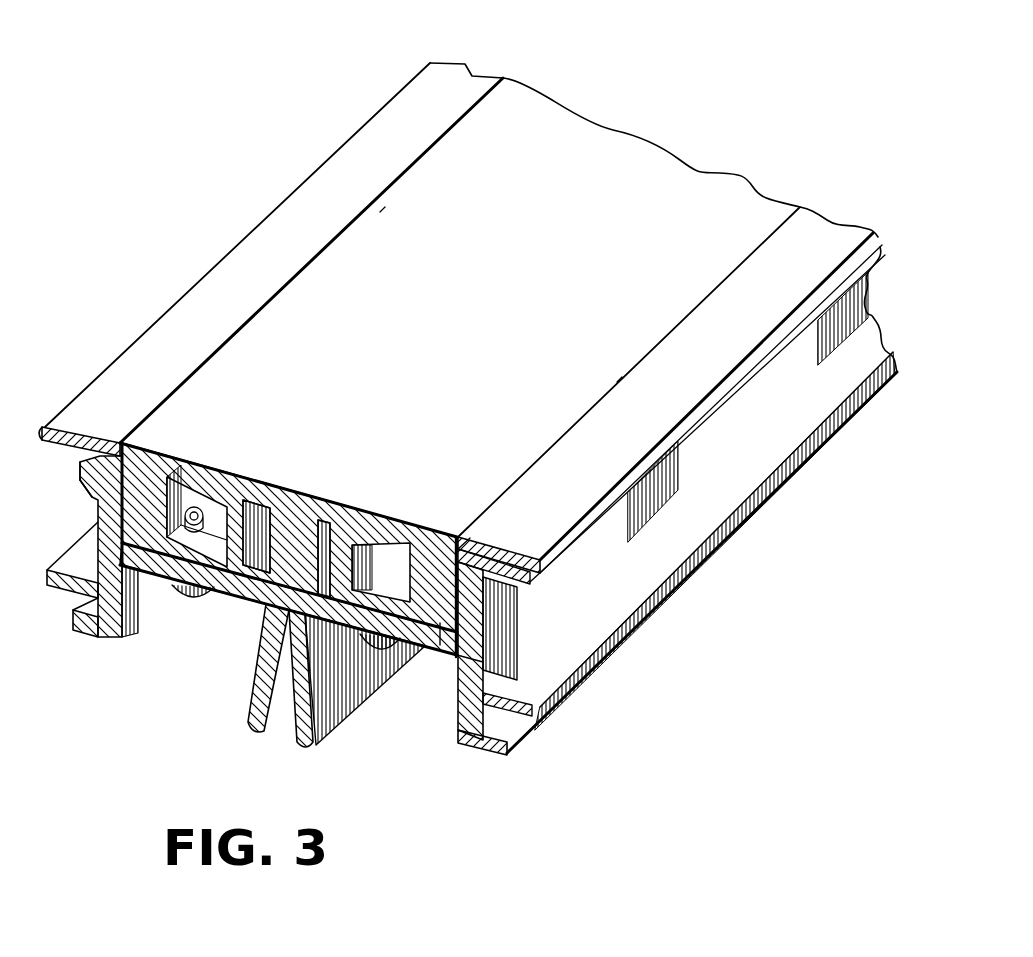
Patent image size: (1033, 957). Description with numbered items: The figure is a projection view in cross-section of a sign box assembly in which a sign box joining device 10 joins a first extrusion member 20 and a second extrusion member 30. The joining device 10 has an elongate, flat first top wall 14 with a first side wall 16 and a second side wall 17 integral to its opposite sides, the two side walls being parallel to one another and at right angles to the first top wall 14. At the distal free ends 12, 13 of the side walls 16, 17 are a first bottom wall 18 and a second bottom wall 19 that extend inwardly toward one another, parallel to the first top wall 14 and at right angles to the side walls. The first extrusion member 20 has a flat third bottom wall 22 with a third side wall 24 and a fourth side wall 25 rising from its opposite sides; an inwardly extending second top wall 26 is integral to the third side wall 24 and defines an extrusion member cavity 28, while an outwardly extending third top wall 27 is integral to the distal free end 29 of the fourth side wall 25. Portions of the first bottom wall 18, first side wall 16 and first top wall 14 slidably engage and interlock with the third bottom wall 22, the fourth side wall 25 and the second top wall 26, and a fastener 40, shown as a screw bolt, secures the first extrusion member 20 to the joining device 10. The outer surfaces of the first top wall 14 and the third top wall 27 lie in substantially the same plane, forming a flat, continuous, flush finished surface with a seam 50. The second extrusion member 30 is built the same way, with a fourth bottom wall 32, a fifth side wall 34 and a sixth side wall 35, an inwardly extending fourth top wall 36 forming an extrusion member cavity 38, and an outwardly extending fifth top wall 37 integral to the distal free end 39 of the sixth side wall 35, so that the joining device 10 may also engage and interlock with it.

The sign box joining device 10 is at (639, 181).
The distal free end of first side wall 12 is at (450, 658).
The distal free end of second side wall 13 is at (97, 527).
The first top wall 14 is at (318, 497).
The first side wall 16 is at (460, 573).
The second side wall 17 is at (80, 476).
The first bottom wall 18 is at (355, 698).
The second bottom wall 19 is at (215, 590).
The first extrusion member 20 is at (607, 423).
The third bottom wall 22 is at (440, 630).
The third side wall 24 is at (315, 545).
The fourth side wall 25 is at (488, 592).
The second top wall 26 is at (415, 540).
The third top wall 27 is at (498, 560).
The extrusion member cavity 28 is at (357, 542).
The distal free end of fourth side wall 29 is at (463, 530).
The second extrusion member 30 is at (288, 240).
The fourth bottom wall 32 is at (138, 600).
The fifth side wall 34 is at (250, 540).
The sixth side wall 35 is at (90, 492).
The fourth top wall 36 is at (182, 492).
The fifth top wall 37 is at (52, 425).
The extrusion member cavity 38 is at (218, 507).
The distal free end of sixth side wall 39 is at (112, 444).
The fastener 40 is at (177, 605).
The seam 50 is at (380, 212).